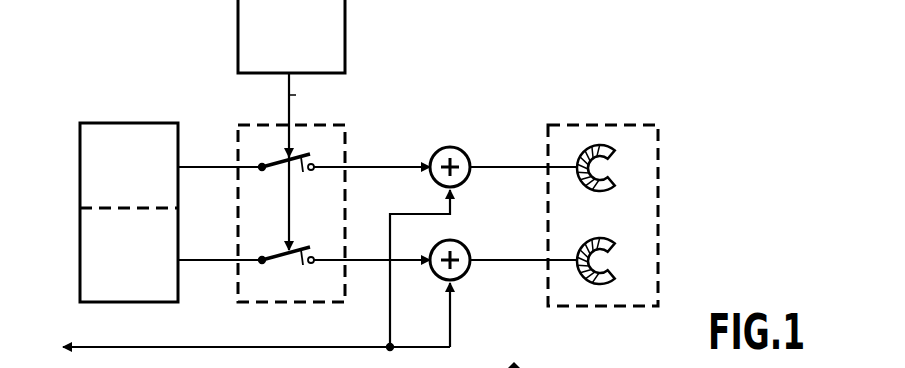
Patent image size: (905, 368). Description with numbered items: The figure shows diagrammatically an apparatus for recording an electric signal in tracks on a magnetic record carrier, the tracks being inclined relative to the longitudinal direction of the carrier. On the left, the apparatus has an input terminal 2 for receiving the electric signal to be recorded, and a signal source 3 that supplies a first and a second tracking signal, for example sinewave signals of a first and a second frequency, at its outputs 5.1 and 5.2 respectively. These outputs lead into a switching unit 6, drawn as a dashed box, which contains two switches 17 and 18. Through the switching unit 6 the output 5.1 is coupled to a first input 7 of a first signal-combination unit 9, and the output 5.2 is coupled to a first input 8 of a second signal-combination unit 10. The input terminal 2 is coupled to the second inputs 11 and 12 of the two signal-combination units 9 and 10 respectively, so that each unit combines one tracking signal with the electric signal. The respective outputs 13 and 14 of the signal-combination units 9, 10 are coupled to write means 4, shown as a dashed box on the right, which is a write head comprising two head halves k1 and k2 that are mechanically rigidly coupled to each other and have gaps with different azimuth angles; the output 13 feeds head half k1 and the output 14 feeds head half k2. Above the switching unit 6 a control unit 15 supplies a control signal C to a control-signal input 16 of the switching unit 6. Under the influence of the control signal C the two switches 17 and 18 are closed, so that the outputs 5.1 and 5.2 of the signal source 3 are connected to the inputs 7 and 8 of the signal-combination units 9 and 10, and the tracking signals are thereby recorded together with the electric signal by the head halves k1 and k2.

The input terminal 2 is at (62, 346).
The signal source 3 is at (79, 146).
The write means 4 is at (603, 214).
The first output of the signal source 5.1 is at (181, 166).
The second output of the signal source 5.2 is at (181, 262).
The switching unit 6 is at (236, 124).
The first input of the first signal-combination unit 7 is at (430, 157).
The first input of the second signal-combination unit 8 is at (430, 251).
The first signal-combination unit 9 is at (451, 148).
The second signal-combination unit 10 is at (466, 275).
The second input of the first signal-combination unit 11 is at (455, 192).
The second input of the second signal-combination unit 12 is at (442, 282).
The output of the first signal-combination unit 13 is at (474, 170).
The output of the second signal-combination unit 14 is at (473, 266).
The control unit 15 is at (238, 35).
The control-signal input 16 is at (287, 124).
The first switch 17 is at (290, 182).
The second switch 18 is at (287, 275).
The control signal C is at (297, 98).
The first head half k1 is at (612, 137).
The second head half k2 is at (609, 292).